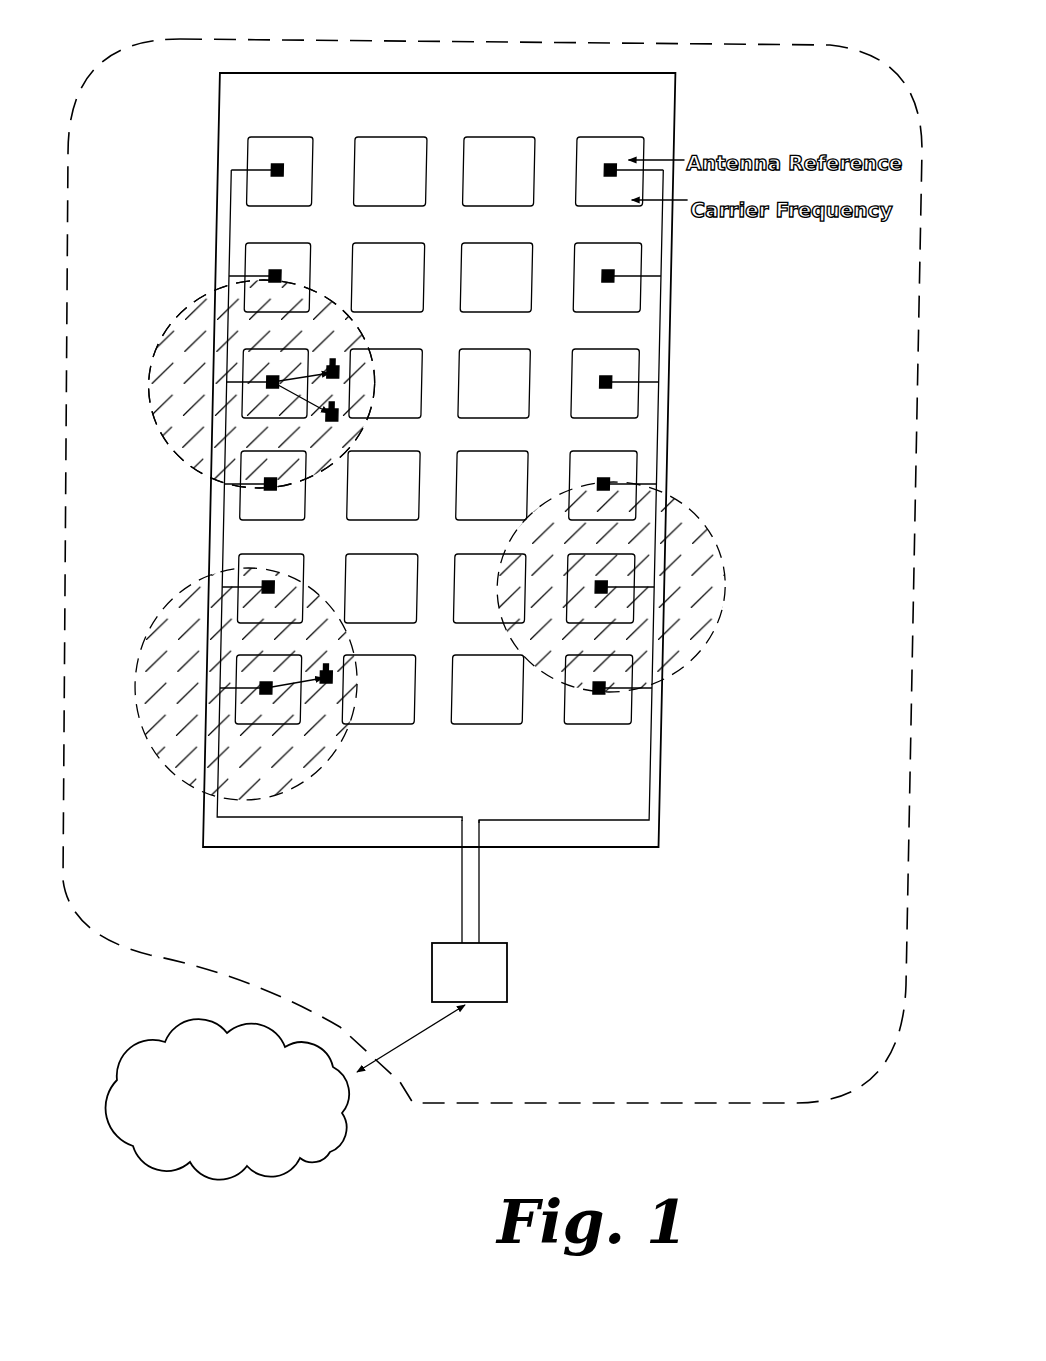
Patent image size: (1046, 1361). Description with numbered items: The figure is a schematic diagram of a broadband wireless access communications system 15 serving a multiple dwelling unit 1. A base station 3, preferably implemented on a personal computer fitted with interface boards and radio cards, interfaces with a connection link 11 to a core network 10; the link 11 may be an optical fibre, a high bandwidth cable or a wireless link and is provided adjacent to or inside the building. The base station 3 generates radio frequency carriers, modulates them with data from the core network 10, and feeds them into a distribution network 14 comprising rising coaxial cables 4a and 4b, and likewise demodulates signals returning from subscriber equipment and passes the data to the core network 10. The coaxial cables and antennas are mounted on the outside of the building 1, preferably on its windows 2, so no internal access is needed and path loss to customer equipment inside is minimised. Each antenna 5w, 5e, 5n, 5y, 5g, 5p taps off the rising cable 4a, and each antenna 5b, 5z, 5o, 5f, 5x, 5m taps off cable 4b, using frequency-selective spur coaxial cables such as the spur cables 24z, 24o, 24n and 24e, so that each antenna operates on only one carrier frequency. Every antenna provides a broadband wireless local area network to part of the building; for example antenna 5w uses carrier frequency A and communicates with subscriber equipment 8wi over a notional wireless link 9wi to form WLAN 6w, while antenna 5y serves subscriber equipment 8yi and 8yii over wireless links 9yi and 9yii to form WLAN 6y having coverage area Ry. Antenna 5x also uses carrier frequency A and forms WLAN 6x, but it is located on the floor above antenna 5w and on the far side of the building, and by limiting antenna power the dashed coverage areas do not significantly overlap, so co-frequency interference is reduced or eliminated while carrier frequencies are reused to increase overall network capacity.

The multiple dwelling unit 1 is at (218, 100).
The windows 2 is at (305, 143).
The base station 3 is at (462, 990).
The coaxial cable 4a is at (227, 533).
The coaxial cable 4b is at (679, 343).
The antenna 5p is at (272, 171).
The antenna 5g is at (269, 277).
The antenna 5y is at (267, 383).
The antenna 5n is at (273, 485).
The antenna 5e is at (270, 588).
The antenna 5w is at (260, 689).
The antenna 5b is at (620, 171).
The antenna 5z is at (607, 277).
The antenna 5o is at (605, 383).
The antenna 5f is at (613, 485).
The antenna 5x is at (610, 588).
The antenna 5m is at (608, 689).
The broadband WLAN 6y is at (201, 388).
The broadband WLAN 6w is at (194, 730).
The broadband WLAN 6x is at (701, 545).
The coverage area Ry is at (195, 302).
The subscriber equipment 8yi is at (354, 366).
The subscriber equipment 8yii is at (358, 419).
The subscriber equipment 8wi is at (356, 669).
The wireless link 9yi is at (309, 368).
The wireless link 9yii is at (325, 426).
The wireless link 9wi is at (308, 672).
The core network 10 is at (241, 1111).
The connection link 11 is at (426, 1046).
The distribution network 14 is at (512, 824).
The broadband access communications system 15 is at (699, 1108).
The spur coaxial cable 24z is at (657, 292).
The spur coaxial cable 24o is at (660, 382).
The spur coaxial cable 24n is at (262, 490).
The spur coaxial cable 24e is at (272, 586).